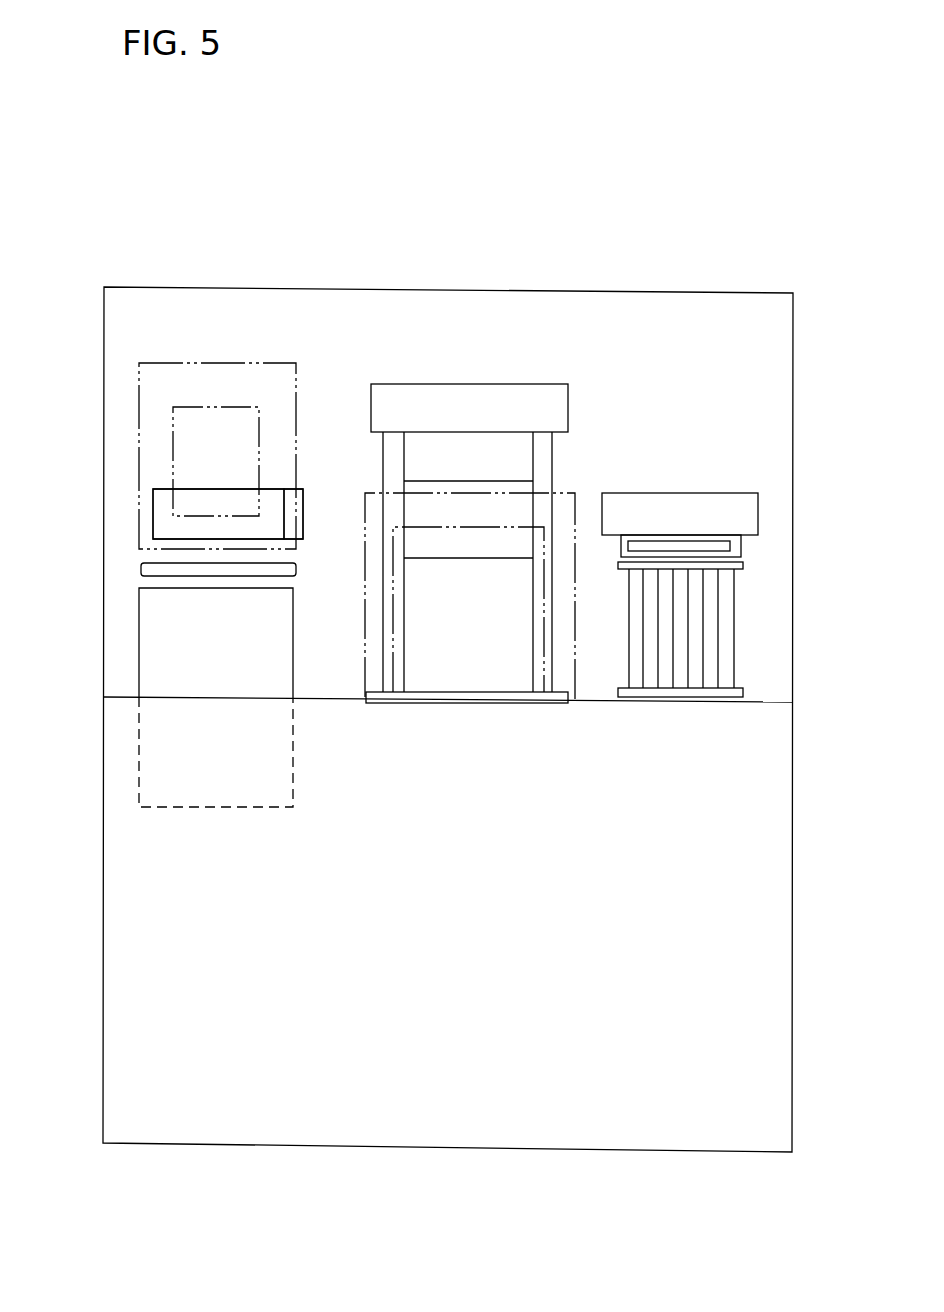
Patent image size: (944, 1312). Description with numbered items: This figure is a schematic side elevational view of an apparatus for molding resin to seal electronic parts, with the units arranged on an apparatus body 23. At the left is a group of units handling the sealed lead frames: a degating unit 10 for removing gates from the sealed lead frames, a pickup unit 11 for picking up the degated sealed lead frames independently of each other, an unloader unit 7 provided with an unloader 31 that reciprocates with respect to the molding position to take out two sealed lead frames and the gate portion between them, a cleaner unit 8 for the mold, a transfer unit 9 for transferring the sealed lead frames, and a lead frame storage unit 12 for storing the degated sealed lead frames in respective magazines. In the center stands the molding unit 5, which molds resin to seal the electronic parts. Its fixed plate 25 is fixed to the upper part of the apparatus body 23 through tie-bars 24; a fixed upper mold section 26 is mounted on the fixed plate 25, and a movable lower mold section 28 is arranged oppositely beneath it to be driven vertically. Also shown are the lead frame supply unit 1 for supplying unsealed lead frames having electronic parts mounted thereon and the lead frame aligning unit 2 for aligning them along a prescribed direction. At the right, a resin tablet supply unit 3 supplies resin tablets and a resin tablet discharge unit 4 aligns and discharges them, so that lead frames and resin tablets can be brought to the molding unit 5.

The lead frame supply unit 1 is at (544, 627).
The lead frame aligning unit 2 is at (365, 615).
The resin tablet supply unit 3 is at (735, 636).
The resin tablet discharge unit 4 is at (708, 492).
The molding unit 5 is at (481, 488).
The unloader unit 7 is at (152, 525).
The cleaner unit 8 is at (305, 512).
The transfer unit 9 is at (140, 567).
The degating unit 10 is at (178, 363).
The pickup unit 11 is at (247, 407).
The lead frame storage unit 12 is at (173, 647).
The apparatus body 23 is at (165, 870).
The tie-bars 24 is at (545, 457).
The fixed plate 25 is at (545, 410).
The fixed upper mold section 26 is at (466, 452).
The movable lower mold section 28 is at (464, 645).
The unloader 31 is at (163, 505).